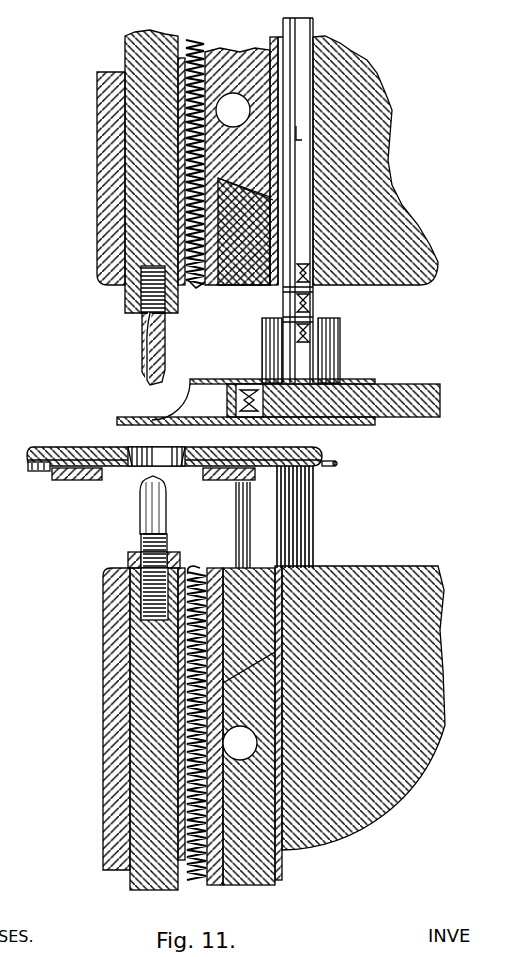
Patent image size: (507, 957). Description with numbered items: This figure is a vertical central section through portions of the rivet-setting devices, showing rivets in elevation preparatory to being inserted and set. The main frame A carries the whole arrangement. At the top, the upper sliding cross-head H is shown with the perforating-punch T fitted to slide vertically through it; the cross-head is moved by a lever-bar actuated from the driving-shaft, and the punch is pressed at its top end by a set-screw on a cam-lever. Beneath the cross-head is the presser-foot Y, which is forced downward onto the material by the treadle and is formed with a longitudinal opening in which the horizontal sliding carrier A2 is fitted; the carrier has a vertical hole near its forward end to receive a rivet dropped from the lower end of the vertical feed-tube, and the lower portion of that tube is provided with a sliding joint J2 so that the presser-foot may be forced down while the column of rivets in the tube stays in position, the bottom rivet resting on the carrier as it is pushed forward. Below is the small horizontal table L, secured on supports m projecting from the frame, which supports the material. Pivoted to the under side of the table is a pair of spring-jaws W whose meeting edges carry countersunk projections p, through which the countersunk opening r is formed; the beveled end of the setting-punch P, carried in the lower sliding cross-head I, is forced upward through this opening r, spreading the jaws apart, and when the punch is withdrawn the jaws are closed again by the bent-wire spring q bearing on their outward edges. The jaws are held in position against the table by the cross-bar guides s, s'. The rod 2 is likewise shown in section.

The main frame A is at (393, 172).
The horizontal sliding carrier A2 is at (438, 402).
The upper sliding cross-head H is at (174, 166).
The perforating-punch T is at (153, 207).
The presser-foot Y is at (245, 367).
The table L is at (167, 450).
The setting-punch P is at (154, 672).
The lower sliding cross-head I is at (103, 708).
The sliding joint J2 is at (338, 326).
The rod 2 is at (301, 131).
The countersunk projections p is at (118, 440).
The countersunk opening r is at (156, 457).
The spring-jaws W is at (126, 468).
The cross-bar guide s is at (229, 482).
The cross-bar guide s' is at (77, 482).
The supports m is at (274, 517).
The bent-wire spring q is at (336, 467).